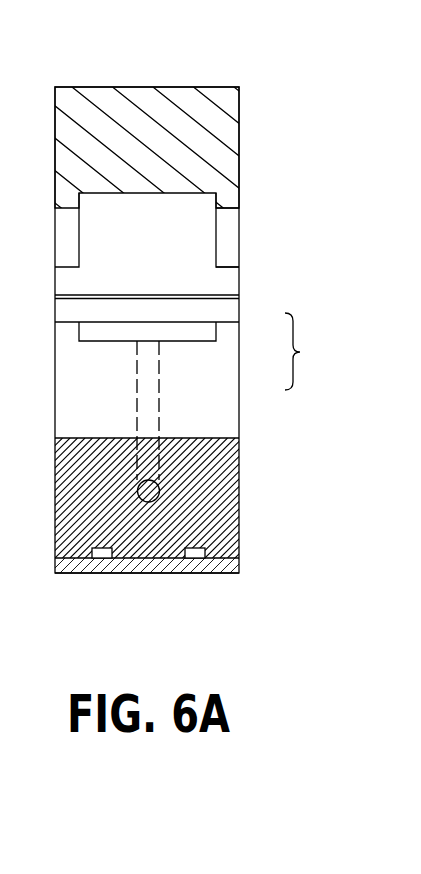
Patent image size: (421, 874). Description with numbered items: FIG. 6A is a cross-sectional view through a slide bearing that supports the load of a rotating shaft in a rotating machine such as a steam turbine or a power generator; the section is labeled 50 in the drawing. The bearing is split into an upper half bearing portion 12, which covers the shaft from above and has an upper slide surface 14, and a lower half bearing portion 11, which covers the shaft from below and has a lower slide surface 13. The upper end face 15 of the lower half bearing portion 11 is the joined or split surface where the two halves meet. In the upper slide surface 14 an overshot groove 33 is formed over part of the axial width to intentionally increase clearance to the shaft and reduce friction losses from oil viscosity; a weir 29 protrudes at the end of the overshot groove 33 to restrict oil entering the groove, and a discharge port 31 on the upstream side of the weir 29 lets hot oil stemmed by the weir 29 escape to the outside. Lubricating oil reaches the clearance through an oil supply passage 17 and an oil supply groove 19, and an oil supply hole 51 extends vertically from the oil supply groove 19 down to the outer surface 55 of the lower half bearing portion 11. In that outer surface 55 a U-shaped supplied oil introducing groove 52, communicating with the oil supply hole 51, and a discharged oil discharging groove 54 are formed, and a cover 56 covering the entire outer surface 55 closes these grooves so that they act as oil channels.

The semiconductor device 50 is at (258, 82).
The lower half bearing portion 11 is at (55, 458).
The upper half bearing portion 12 is at (65, 138).
The overshot groove 33 is at (127, 202).
The upper slide surface 14 is at (228, 218).
The discharge port 31 is at (227, 286).
The weir 29 is at (155, 312).
The upper end face 15 is at (67, 320).
The oil supply groove 19 is at (205, 330).
The oil supply hole 51 is at (150, 377).
The oil supply passage 17 is at (309, 351).
The lower slide surface 13 is at (183, 427).
The discharged oil discharging groove 54 is at (107, 574).
The supplied oil introducing groove 52 is at (199, 574).
The outer surface 55 is at (158, 574).
The cover 56 is at (66, 574).